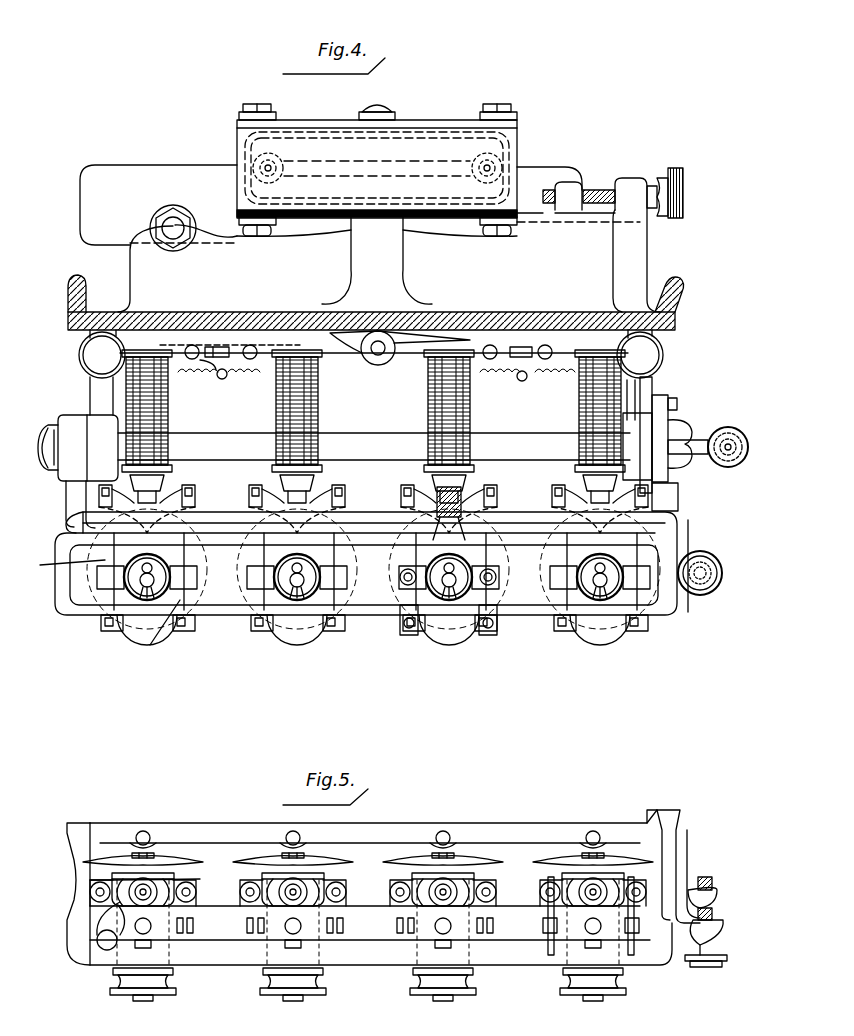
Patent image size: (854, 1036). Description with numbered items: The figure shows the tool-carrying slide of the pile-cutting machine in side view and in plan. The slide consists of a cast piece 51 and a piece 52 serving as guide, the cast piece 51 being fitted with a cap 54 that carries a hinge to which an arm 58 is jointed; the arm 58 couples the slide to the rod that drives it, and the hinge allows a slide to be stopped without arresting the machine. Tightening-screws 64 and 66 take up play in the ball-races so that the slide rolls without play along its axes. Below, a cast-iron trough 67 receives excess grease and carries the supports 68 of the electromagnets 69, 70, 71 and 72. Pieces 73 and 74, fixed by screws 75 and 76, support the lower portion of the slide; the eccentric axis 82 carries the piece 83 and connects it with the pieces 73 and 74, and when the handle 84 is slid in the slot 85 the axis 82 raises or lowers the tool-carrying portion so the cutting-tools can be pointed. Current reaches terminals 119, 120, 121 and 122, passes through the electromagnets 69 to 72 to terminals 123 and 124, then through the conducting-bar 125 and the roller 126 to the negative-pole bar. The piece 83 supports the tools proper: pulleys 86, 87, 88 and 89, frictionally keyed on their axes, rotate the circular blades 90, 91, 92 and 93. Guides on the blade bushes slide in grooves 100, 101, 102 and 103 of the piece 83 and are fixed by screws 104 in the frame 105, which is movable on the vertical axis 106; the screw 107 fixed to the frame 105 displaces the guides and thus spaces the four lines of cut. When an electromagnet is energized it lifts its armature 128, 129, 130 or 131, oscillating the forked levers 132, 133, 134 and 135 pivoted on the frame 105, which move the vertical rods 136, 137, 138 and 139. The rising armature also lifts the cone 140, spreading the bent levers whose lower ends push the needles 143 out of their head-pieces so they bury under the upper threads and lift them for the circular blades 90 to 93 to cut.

In FIG. 4, the cast piece 51 is at (377, 170).
In FIG. 4, the arm 58 is at (388, 116).
In FIG. 4, the cap 54 is at (158, 205).
In FIG. 4, the tightening-screw 66 is at (170, 228).
In FIG. 4, the guide piece 52 is at (389, 239).
In FIG. 4, the tightening-screw 64 is at (680, 196).
In FIG. 4, the cast-iron trough 67 is at (92, 297).
In FIG. 4, the support 68 is at (248, 343).
In FIG. 4, the conducting-bar 125 is at (372, 314).
In FIG. 4, the roller 126 is at (360, 358).
In FIG. 4, the screw 76 is at (102, 354).
In FIG. 4, the screw 75 is at (640, 354).
In FIG. 4, the electromagnet 72 is at (108, 386).
In FIG. 4, the piece 74 is at (78, 471).
In FIG. 4, the electromagnet 70 is at (428, 411).
In FIG. 4, the electromagnet 71 is at (276, 420).
In FIG. 4, the eccentric axis 82 is at (374, 406).
In FIG. 4, the electromagnet 69 is at (690, 381).
In FIG. 4, the piece 73 is at (640, 420).
In FIG. 4, the slot 85 is at (692, 435).
In FIG. 4, the handle 84 is at (742, 462).
In FIG. 4, the piece 83 is at (660, 490).
In FIG. 5, the piece 83 is at (232, 920).
In FIG. 4, the terminal 121 is at (252, 360).
In FIG. 4, the terminal 122 is at (220, 378).
In FIG. 4, the terminal 124 is at (198, 391).
In FIG. 4, the terminal 120 is at (505, 365).
In FIG. 4, the terminal 119 is at (548, 362).
In FIG. 4, the terminal 123 is at (523, 383).
In FIG. 4, the armature 131 is at (158, 495).
In FIG. 4, the armature 130 is at (308, 495).
In FIG. 4, the armature 129 is at (440, 500).
In FIG. 4, the armature 128 is at (590, 495).
In FIG. 4, the forked lever 135 is at (165, 500).
In FIG. 4, the forked lever 134 is at (318, 498).
In FIG. 4, the forked lever 133 is at (470, 498).
In FIG. 4, the vertical rod 138 is at (268, 528).
In FIG. 4, the vertical rod 137 is at (485, 530).
In FIG. 4, the forked lever 132 is at (612, 500).
In FIG. 5, the forked lever 132 is at (551, 950).
In FIG. 4, the frame 105 is at (688, 532).
In FIG. 5, the frame 105 is at (369, 887).
In FIG. 4, the pulley 89 is at (140, 598).
In FIG. 5, the pulley 89 is at (175, 980).
In FIG. 4, the pulley 88 is at (292, 600).
In FIG. 5, the pulley 88 is at (322, 968).
In FIG. 4, the pulley 87 is at (416, 600).
In FIG. 5, the pulley 87 is at (420, 978).
In FIG. 4, the pulley 86 is at (598, 598).
In FIG. 5, the pulley 86 is at (600, 985).
In FIG. 4, the cone 140 is at (458, 590).
In FIG. 4, the vertical rod 139 is at (97, 606).
In FIG. 4, the circular blade 93 is at (185, 600).
In FIG. 5, the circular blade 93 is at (110, 860).
In FIG. 4, the circular blade 92 is at (345, 600).
In FIG. 5, the circular blade 92 is at (240, 860).
In FIG. 4, the circular blade 91 is at (480, 598).
In FIG. 5, the circular blade 91 is at (405, 860).
In FIG. 4, the circular blade 90 is at (665, 600).
In FIG. 5, the circular blade 90 is at (555, 860).
In FIG. 4, the needle-blade 143 is at (140, 644).
In FIG. 4, the vertical rod 136 is at (705, 560).
In FIG. 4, the screw 107 is at (722, 578).
In FIG. 5, the screw 107 is at (712, 968).
In FIG. 5, the vertical axis 106 is at (107, 952).
In FIG. 5, the screw 104 is at (140, 930).
In FIG. 5, the groove 103 is at (145, 948).
In FIG. 5, the groove 102 is at (296, 948).
In FIG. 5, the groove 101 is at (462, 968).
In FIG. 5, the groove 100 is at (598, 950).